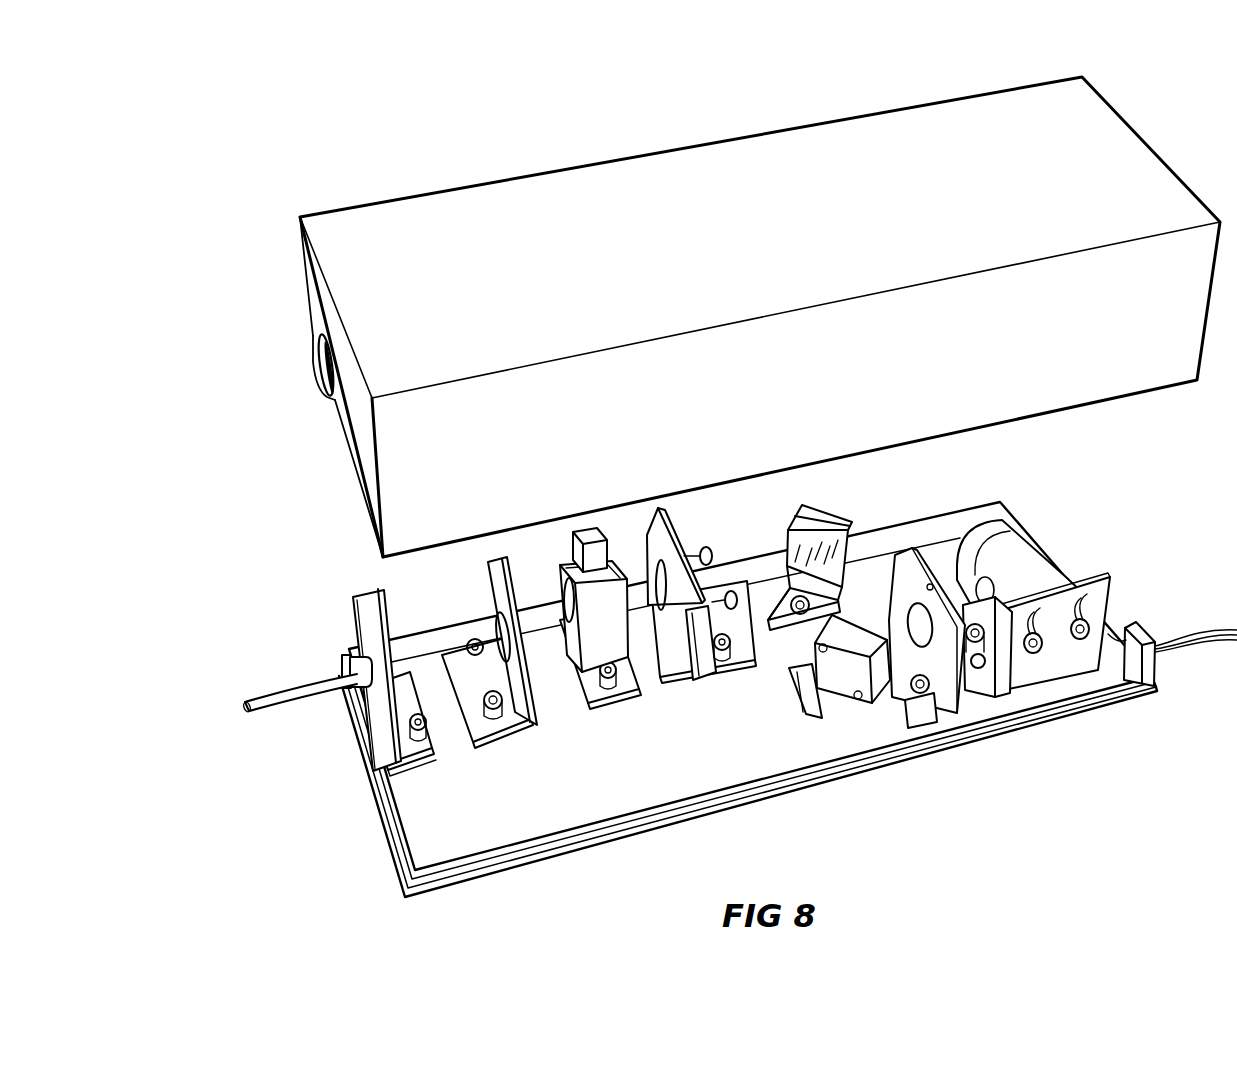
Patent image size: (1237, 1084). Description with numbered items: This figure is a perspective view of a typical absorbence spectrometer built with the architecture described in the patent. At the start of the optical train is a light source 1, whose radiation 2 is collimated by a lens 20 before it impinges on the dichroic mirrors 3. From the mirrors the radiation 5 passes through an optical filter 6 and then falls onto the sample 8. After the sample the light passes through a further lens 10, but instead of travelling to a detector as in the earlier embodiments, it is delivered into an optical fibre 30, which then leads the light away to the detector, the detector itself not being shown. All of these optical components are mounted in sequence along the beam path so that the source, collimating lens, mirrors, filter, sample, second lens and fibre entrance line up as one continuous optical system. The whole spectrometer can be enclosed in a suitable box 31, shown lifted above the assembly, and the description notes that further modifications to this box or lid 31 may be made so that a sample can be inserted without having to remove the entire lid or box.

The light source 1 is at (1013, 558).
The radiation 2 is at (992, 630).
The dichroic mirrors 3 is at (827, 513).
The radiation 5 is at (752, 577).
The optical filter 6 is at (670, 512).
The sample 8 is at (583, 533).
The lens 10 is at (531, 690).
The lens 20 is at (921, 632).
The optical fibre 30 is at (305, 683).
The box 31 is at (1080, 173).